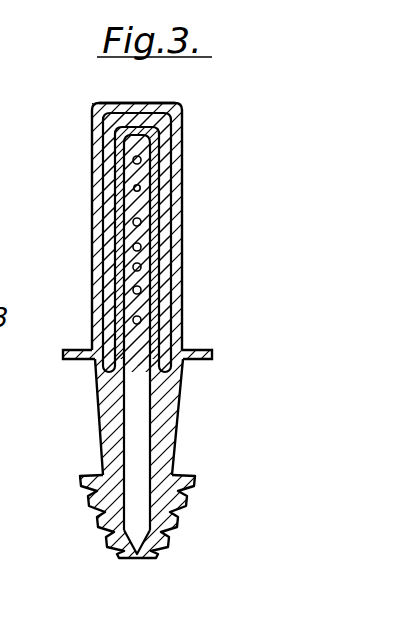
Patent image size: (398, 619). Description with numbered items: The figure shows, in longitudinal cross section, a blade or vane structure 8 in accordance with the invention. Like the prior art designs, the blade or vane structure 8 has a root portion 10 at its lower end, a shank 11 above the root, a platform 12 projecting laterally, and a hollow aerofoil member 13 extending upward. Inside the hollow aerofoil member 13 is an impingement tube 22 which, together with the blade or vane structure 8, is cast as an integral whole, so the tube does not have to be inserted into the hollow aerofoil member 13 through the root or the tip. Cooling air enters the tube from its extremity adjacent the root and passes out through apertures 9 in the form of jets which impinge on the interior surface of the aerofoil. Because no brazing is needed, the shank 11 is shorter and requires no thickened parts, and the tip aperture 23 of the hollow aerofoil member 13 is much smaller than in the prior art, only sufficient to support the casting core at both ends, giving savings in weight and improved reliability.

The blade or vane structure 8 is at (206, 168).
The apertures 9 is at (138, 187).
The root portion 10 is at (190, 490).
The shank 11 is at (172, 423).
The platform 12 is at (205, 350).
The hollow aerofoil member 13 is at (173, 279).
The impingement tube 22 is at (163, 218).
The tip aperture 23 is at (132, 110).